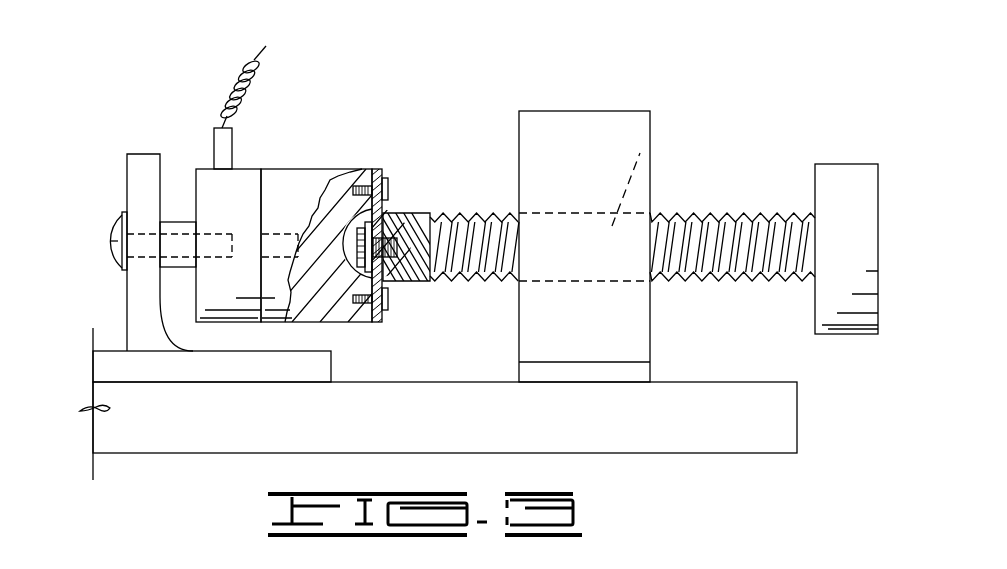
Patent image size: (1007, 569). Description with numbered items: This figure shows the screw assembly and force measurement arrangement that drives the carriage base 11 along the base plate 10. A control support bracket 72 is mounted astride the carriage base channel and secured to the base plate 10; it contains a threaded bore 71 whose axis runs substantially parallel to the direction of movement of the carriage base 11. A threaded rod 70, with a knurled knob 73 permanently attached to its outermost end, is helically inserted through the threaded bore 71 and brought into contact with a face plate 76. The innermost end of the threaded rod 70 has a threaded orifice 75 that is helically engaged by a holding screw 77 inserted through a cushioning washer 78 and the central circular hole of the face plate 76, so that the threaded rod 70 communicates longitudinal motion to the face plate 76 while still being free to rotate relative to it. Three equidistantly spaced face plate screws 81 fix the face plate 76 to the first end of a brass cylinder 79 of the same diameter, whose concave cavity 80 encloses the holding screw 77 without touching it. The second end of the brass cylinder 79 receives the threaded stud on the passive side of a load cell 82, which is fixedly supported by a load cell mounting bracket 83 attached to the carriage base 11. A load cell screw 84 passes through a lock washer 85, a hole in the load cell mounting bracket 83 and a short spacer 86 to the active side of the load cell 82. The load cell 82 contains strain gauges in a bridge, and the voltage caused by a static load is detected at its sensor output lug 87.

The base plate 10 is at (158, 440).
The carriage base 11 is at (103, 372).
The threaded rod 70 is at (697, 210).
The threaded bore 71 is at (655, 136).
The control support bracket 72 is at (560, 111).
The knurled knob 73 is at (838, 164).
The threaded orifice 75 is at (393, 265).
The face plate 76 is at (375, 170).
The holding screw 77 is at (318, 215).
The cushioning washer 78 is at (362, 237).
The brass cylinder 79 is at (277, 185).
The concave cavity 80 is at (352, 257).
The face plate screws 81 is at (388, 180).
The load cell 82 is at (205, 168).
The load cell mounting bracket 83 is at (140, 154).
The load cell screw 84 is at (108, 240).
The lock washer 85 is at (118, 268).
The short spacer 86 is at (173, 222).
The sensor output lug 87 is at (222, 127).